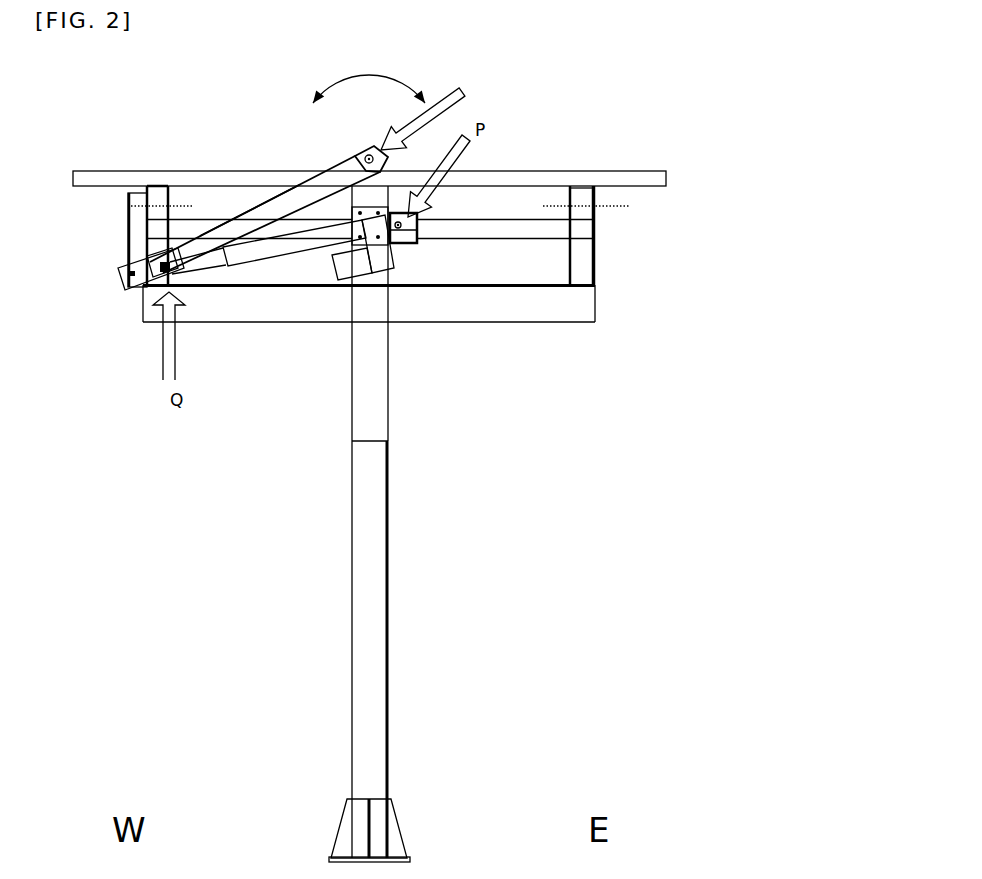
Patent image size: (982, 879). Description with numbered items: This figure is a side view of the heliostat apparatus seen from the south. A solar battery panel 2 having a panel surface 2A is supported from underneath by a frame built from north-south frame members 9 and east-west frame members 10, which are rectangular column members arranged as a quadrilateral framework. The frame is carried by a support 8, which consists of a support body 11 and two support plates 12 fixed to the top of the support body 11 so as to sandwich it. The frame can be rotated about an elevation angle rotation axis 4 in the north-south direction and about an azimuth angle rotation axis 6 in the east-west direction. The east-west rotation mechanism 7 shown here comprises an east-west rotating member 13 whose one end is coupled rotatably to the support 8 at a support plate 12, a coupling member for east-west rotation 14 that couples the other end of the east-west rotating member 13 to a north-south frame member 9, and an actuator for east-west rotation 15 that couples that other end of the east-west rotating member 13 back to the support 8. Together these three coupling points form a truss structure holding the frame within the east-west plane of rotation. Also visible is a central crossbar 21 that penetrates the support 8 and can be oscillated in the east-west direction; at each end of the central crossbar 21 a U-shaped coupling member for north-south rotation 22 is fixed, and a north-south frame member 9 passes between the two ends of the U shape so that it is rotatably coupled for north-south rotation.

The solar battery panel 2 is at (96, 162).
The panel surface 2A is at (154, 170).
The elevation angle rotation axis 4 is at (190, 206).
The azimuth angle rotation axis 6 is at (414, 112).
The east-west rotation mechanism 7 is at (235, 192).
The support 8 is at (433, 524).
The north-south frame member 9 is at (155, 193).
The east-west frame member 10 is at (498, 228).
The support body 11 is at (375, 588).
The support plate 12 is at (378, 382).
The east-west rotating member 13 is at (270, 205).
The coupling member for east-west rotation 14 is at (135, 237).
The actuator for east-west rotation 15 is at (270, 257).
The central crossbar 21 is at (523, 308).
The coupling member for north-south rotation 22 is at (604, 268).